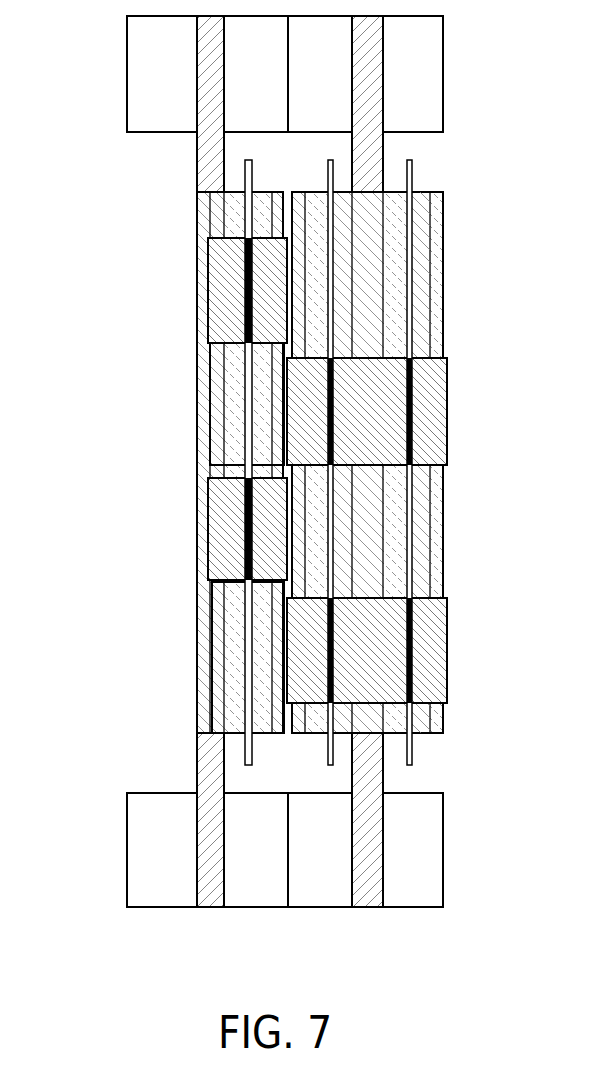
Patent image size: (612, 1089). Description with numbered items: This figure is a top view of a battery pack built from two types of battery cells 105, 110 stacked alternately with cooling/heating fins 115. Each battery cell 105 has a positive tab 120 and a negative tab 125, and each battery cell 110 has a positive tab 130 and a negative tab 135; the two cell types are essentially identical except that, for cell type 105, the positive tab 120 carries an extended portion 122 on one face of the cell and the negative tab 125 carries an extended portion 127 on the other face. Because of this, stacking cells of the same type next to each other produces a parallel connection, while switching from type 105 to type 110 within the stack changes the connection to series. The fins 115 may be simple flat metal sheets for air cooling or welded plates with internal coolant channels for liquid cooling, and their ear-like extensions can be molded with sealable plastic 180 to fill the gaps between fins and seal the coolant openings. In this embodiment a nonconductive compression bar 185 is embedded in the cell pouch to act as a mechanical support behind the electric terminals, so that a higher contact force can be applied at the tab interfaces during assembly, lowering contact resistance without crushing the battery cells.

The battery cell 105 is at (232, 212).
The battery cell 110 is at (343, 263).
The cooling/heating fin 115 is at (197, 147).
The positive tab 120 is at (215, 288).
The extended portion 122 is at (210, 397).
The negative tab 125 is at (215, 520).
The extended portion 127 is at (284, 643).
The positive tab 130 is at (445, 648).
The negative tab 135 is at (445, 412).
The plastic 180 is at (132, 850).
The nonconductive compression bar 185 is at (422, 268).